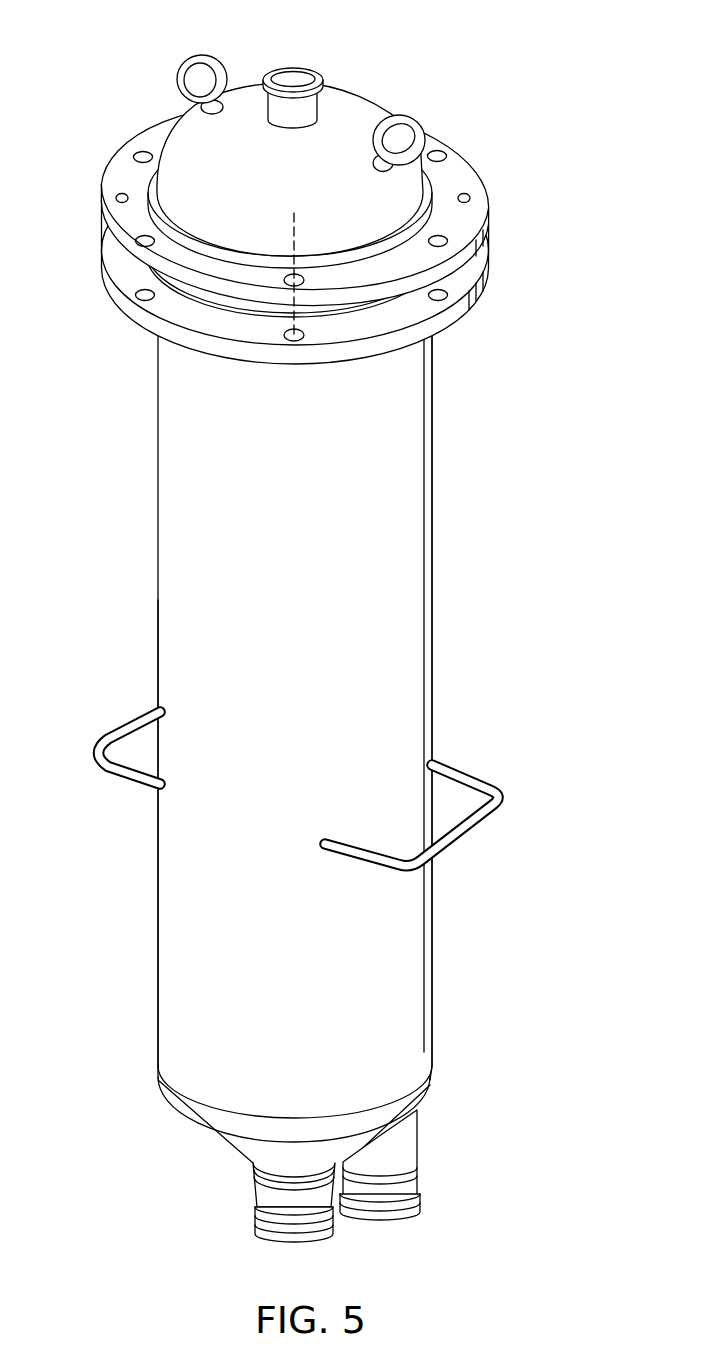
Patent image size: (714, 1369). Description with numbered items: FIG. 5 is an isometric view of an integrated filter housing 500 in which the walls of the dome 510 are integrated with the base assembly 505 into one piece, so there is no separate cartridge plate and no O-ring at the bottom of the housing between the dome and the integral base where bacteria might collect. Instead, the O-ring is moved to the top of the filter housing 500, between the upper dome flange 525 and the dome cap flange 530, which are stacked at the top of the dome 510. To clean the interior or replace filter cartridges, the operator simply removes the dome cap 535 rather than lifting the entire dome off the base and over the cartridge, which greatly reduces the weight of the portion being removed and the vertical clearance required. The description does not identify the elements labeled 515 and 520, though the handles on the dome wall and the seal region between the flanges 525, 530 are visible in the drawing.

The integrated filter housing 500 is at (550, 75).
The base assembly 505 is at (226, 1142).
The dome 510 is at (433, 524).
The vessel shell lower section with handles 515 is at (150, 921).
The gasket 520 is at (235, 313).
The upper dome flange 525 is at (115, 275).
The dome cap flange 530 is at (128, 232).
The dome cap 535 is at (343, 107).